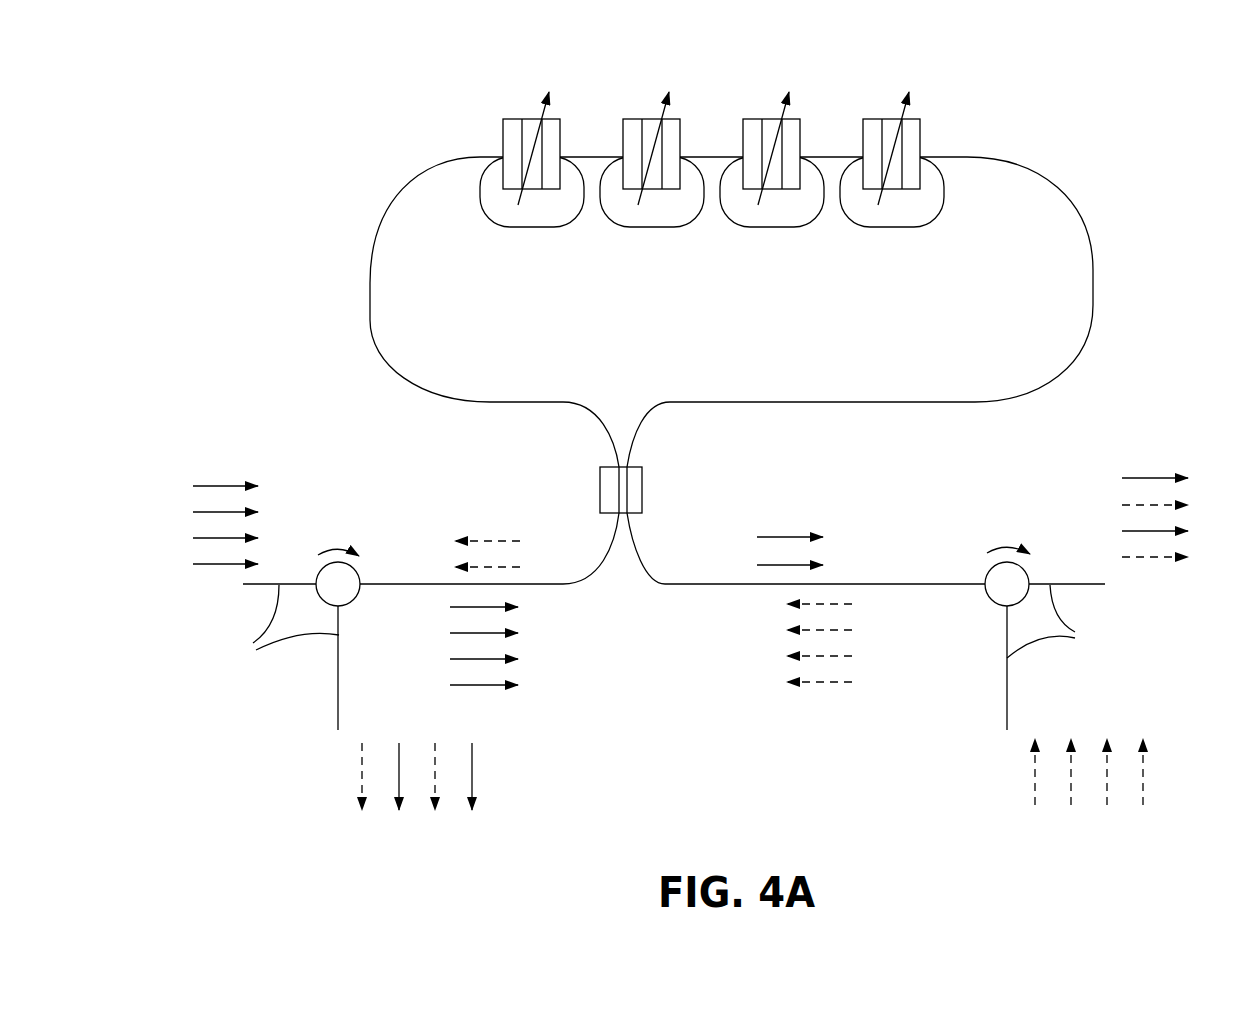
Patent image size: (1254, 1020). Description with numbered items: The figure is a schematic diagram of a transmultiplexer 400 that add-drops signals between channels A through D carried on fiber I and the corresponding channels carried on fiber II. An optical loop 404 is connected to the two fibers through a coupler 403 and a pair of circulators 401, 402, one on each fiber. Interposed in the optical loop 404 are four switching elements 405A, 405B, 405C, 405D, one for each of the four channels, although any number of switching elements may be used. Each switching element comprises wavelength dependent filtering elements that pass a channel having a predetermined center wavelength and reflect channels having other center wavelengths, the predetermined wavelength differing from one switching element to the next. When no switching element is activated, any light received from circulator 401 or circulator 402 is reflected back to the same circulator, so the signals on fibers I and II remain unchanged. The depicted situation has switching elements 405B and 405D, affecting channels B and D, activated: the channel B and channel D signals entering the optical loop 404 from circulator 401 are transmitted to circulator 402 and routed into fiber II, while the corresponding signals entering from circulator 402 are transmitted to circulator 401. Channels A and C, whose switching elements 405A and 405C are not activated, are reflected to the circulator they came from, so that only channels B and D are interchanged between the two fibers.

The transmultiplexer 400 is at (1122, 115).
The circulator 401 is at (315, 580).
The circulator 402 is at (983, 574).
The coupler 403 is at (642, 485).
The optical loop 404 is at (1088, 318).
The switching element 405A is at (512, 118).
The switching element 405B is at (632, 118).
The switching element 405C is at (752, 118).
The switching element 405D is at (872, 118).